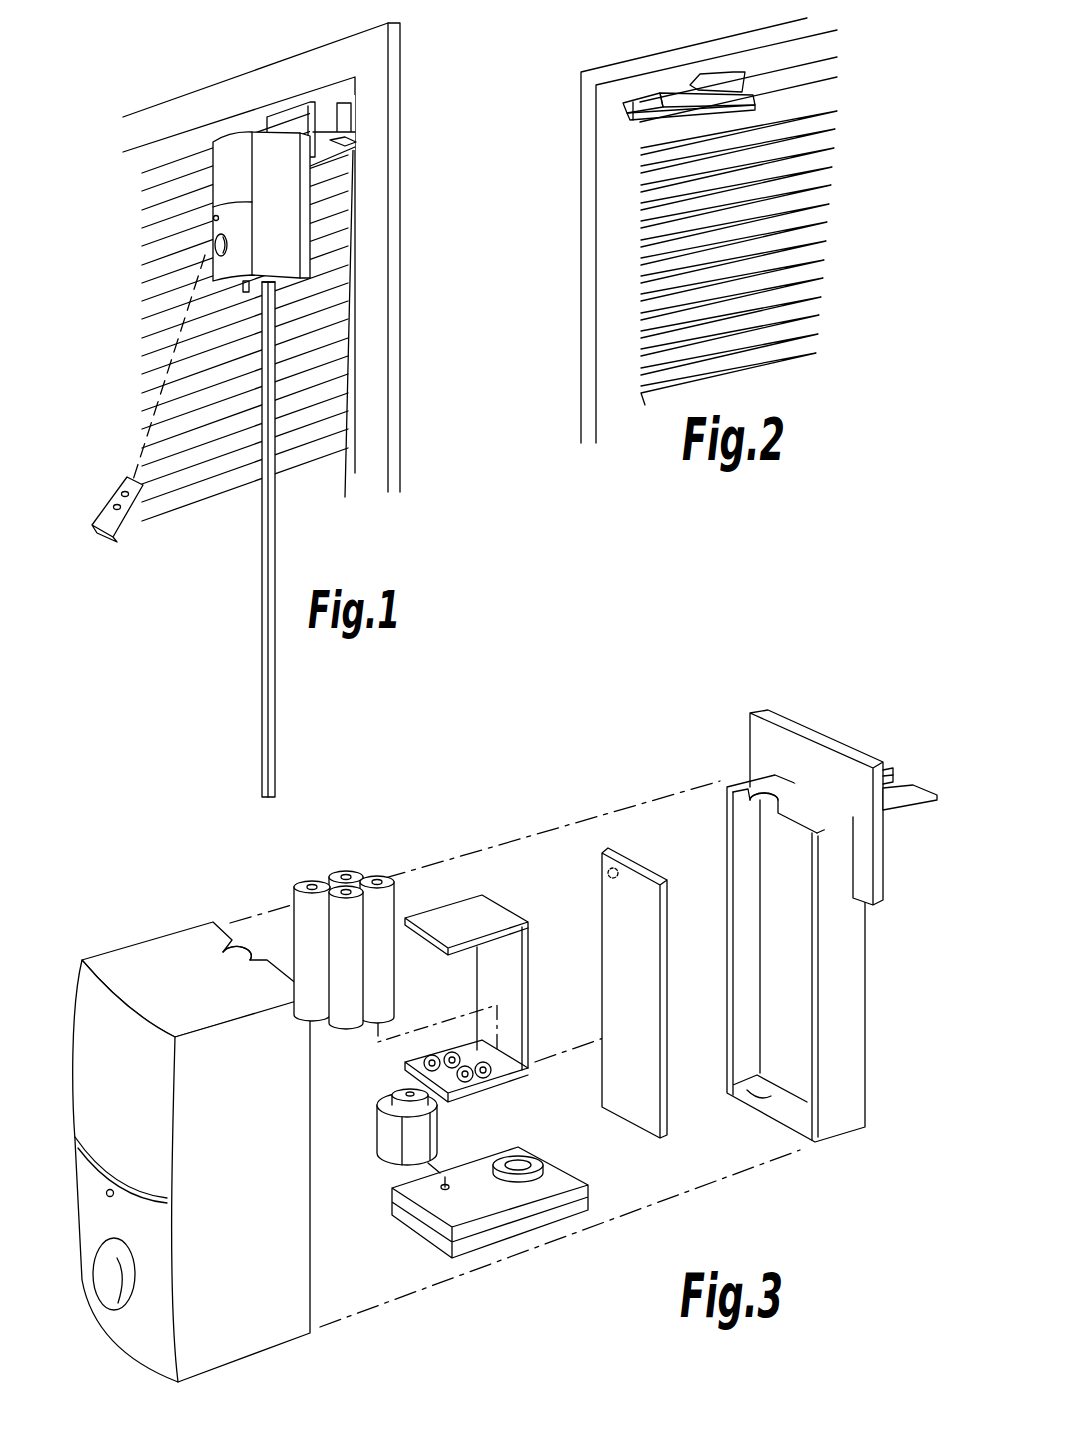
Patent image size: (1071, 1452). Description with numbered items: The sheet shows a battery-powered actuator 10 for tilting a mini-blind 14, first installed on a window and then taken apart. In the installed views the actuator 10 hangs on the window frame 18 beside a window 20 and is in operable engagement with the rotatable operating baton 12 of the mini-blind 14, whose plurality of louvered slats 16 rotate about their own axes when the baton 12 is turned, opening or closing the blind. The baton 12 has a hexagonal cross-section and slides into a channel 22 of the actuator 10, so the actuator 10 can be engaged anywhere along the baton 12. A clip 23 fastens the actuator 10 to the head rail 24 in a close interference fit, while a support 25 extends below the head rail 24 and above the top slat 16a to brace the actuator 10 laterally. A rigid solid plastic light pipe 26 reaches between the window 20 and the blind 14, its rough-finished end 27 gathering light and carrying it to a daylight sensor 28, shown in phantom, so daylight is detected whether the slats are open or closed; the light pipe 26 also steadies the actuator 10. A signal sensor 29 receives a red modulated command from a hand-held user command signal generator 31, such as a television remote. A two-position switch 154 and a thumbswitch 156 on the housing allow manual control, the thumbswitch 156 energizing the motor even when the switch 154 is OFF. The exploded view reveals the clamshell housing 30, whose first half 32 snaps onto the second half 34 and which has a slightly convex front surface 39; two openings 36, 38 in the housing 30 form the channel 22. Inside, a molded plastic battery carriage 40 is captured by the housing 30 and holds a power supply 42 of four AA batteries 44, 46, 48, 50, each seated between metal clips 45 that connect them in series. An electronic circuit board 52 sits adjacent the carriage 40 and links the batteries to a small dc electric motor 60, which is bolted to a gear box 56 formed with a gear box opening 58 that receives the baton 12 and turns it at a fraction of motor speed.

In FIG. 1, the actuator 10 is at (198, 150).
In FIG. 1, the rotatable operating baton 12 is at (276, 527).
In FIG. 1, the mini-blind 14 is at (150, 370).
In FIG. 1, the louvered slats 16 is at (195, 473).
In FIG. 2, the top slat 16a is at (807, 102).
In FIG. 1, the window frame 18 is at (345, 88).
In FIG. 1, the window 20 is at (355, 477).
In FIG. 2, the window 20 is at (610, 210).
In FIG. 1, the channel 22 is at (287, 290).
In FIG. 1, the clip 23 is at (291, 129).
In FIG. 2, the clip 23 is at (713, 88).
In FIG. 3, the clip 23 is at (841, 727).
In FIG. 1, the head rail 24 is at (343, 110).
In FIG. 2, the head rail 24 is at (805, 68).
In FIG. 1, the support 25 is at (336, 141).
In FIG. 2, the support 25 is at (650, 122).
In FIG. 3, the support 25 is at (900, 811).
In FIG. 2, the light pipe 26 is at (657, 132).
In FIG. 3, the light pipe 26 is at (893, 780).
In FIG. 2, the end of light pipe 27 is at (690, 92).
In FIG. 3, the end of light pipe 27 is at (893, 778).
In FIG. 3, the daylight sensor 28 is at (616, 868).
In FIG. 1, the signal sensor 29 is at (214, 217).
In FIG. 3, the signal sensor 29 is at (114, 1198).
In FIG. 1, the clamshell housing 30 is at (212, 262).
In FIG. 3, the clamshell housing 30 is at (135, 962).
In FIG. 1, the hand-held user command signal generator 31 is at (108, 536).
In FIG. 3, the first half of housing 32 is at (242, 1347).
In FIG. 3, the second half of housing 34 is at (840, 1127).
In FIG. 3, the opening 36 is at (246, 950).
In FIG. 3, the opening 38 is at (760, 1103).
In FIG. 3, the convex front surface 39 is at (84, 997).
In FIG. 3, the battery carriage 40 is at (487, 913).
In FIG. 3, the power supply 42 is at (330, 884).
In FIG. 3, the battery 44 is at (347, 876).
In FIG. 3, the metal clips 45 is at (475, 1066).
In FIG. 3, the battery 46 is at (378, 880).
In FIG. 3, the battery 48 is at (322, 880).
In FIG. 3, the battery 50 is at (298, 880).
In FIG. 3, the electronic circuit board 52 is at (637, 1132).
In FIG. 3, the gear box 56 is at (542, 1243).
In FIG. 3, the gear box opening 58 is at (522, 1160).
In FIG. 3, the electric motor 60 is at (380, 1127).
In FIG. 1, the two-position switch 154 is at (241, 290).
In FIG. 1, the thumbswitch 156 is at (215, 247).
In FIG. 3, the thumbswitch 156 is at (127, 1296).